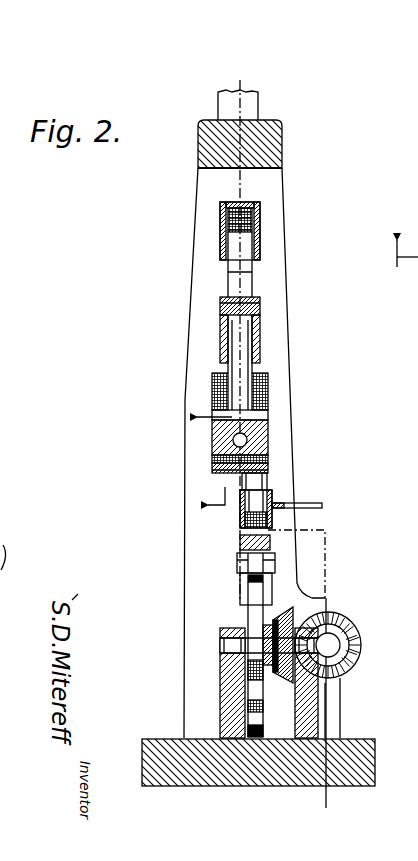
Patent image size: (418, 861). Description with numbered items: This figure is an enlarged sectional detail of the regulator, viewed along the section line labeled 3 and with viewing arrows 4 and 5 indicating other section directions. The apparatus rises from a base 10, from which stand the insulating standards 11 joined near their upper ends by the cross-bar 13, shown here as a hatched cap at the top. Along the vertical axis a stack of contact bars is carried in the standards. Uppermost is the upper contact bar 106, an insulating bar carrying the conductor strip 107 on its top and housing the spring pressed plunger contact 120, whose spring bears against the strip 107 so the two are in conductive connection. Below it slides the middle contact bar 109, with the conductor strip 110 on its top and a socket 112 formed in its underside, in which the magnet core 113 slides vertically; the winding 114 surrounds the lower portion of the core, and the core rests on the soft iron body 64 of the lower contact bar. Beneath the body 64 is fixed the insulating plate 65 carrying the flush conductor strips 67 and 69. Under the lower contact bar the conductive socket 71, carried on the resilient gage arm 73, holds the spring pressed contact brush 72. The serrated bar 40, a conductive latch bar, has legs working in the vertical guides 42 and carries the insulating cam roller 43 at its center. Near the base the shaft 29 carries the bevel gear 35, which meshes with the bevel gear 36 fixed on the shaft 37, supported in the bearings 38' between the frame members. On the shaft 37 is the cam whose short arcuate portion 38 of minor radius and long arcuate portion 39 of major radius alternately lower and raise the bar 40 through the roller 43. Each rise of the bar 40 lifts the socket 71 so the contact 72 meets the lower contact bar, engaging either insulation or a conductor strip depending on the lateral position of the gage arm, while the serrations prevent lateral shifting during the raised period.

The section line 3- 3 is at (283, 447).
The direction arrow 5 is at (404, 268).
The base 10 is at (152, 748).
The standards 11 is at (185, 590).
The cross-bar 13 is at (282, 150).
The shaft 29 is at (340, 645).
The bevel gear 35 is at (355, 657).
The bevel gear 36 is at (285, 613).
The shaft 37 is at (222, 648).
The short arcuate cam portion 38 is at (337, 683).
The bearings 38' is at (197, 683).
The long arcuate cam portion 39 is at (250, 594).
The serrated bar 40 is at (240, 546).
The vertical guides 42 is at (247, 577).
The cam roller 43 is at (270, 561).
The lower contact bar body 64 is at (265, 430).
The insulating plate 65 is at (262, 462).
The conductor strip 67 is at (265, 473).
The conductor strip 69 is at (212, 472).
The conductive socket 71 is at (268, 491).
The contact brush 72 is at (237, 488).
The arm 73 is at (322, 503).
The section arrows 4 is at (196, 475).
The upper contact bar 106 is at (222, 240).
The conductor strip 107 is at (258, 204).
The middle contact bar 109 is at (222, 313).
The conductor strip 110 is at (220, 298).
The socket 112 is at (262, 312).
The magnet core 113 is at (245, 335).
The winding 114 is at (265, 387).
The spring pressed plunger contact 120 is at (252, 285).